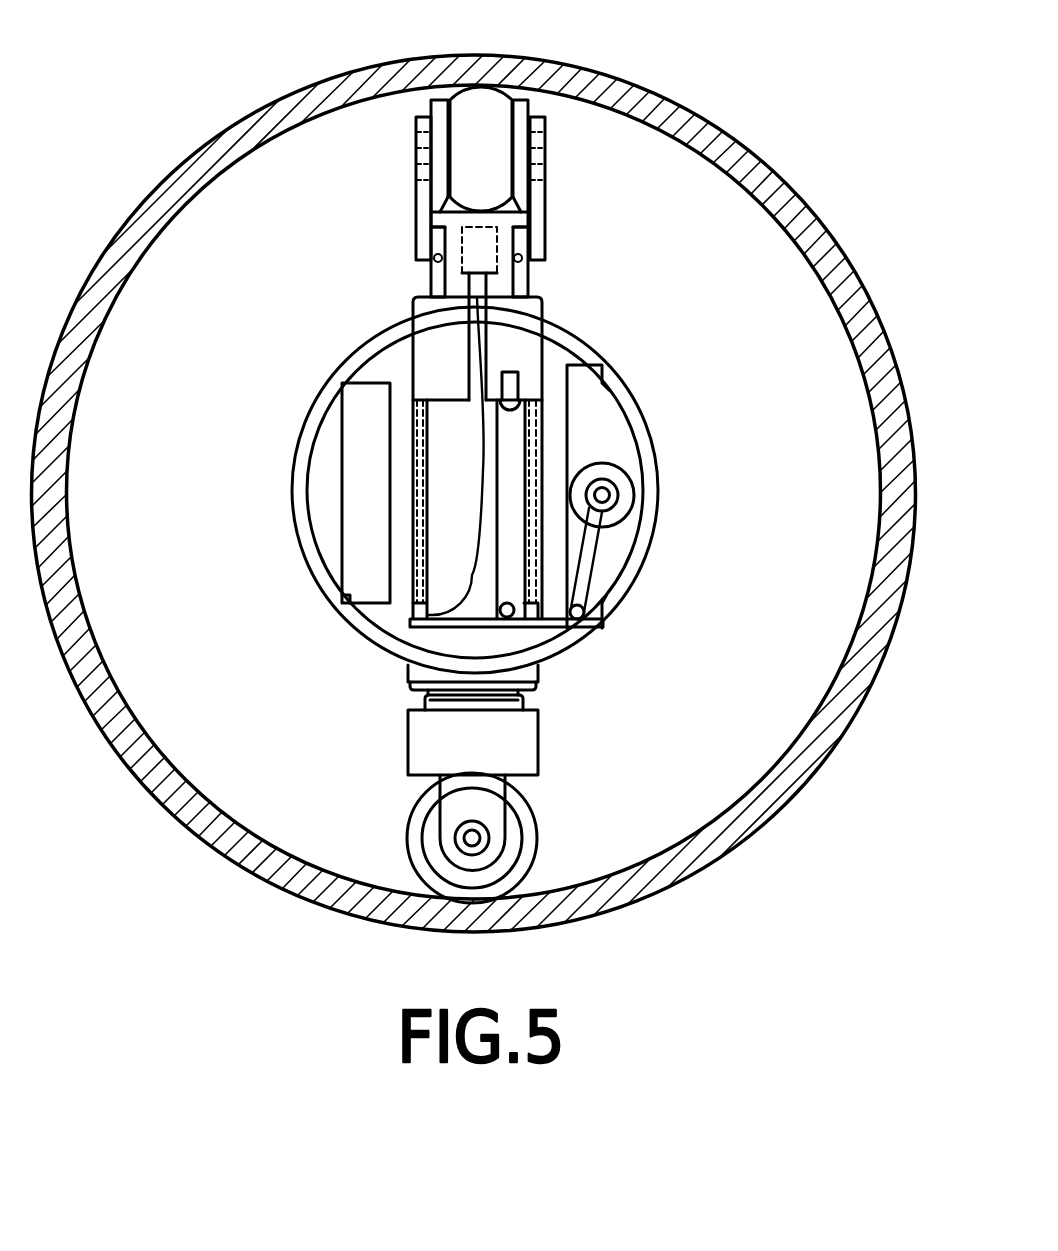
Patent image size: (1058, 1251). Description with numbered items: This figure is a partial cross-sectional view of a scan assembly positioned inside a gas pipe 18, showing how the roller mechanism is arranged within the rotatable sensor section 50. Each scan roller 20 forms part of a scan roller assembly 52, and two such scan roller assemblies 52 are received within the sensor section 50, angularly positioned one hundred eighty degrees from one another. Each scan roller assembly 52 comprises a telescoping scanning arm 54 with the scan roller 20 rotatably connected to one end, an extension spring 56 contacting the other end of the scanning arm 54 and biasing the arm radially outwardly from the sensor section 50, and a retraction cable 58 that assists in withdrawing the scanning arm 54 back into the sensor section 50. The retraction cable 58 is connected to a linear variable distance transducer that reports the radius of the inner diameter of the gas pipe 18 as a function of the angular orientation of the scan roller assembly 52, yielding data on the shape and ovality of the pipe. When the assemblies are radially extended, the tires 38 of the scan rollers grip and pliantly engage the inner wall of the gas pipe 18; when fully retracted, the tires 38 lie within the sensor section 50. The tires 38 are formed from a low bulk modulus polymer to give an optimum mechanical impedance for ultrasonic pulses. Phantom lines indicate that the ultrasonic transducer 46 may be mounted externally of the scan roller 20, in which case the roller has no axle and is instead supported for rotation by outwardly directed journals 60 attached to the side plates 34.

The gas pipe 18 is at (758, 180).
The scan roller 20 is at (490, 115).
The side plates 34 is at (545, 210).
The tires 38 is at (470, 170).
The ultrasonic transducer 46 is at (480, 250).
The sensor section 50 is at (650, 483).
The scan roller assembly 52 is at (540, 276).
The telescoping scanning arm 54 is at (542, 305).
The extension spring 56 is at (533, 457).
The retraction cable 58 is at (590, 560).
The journals 60 is at (538, 152).